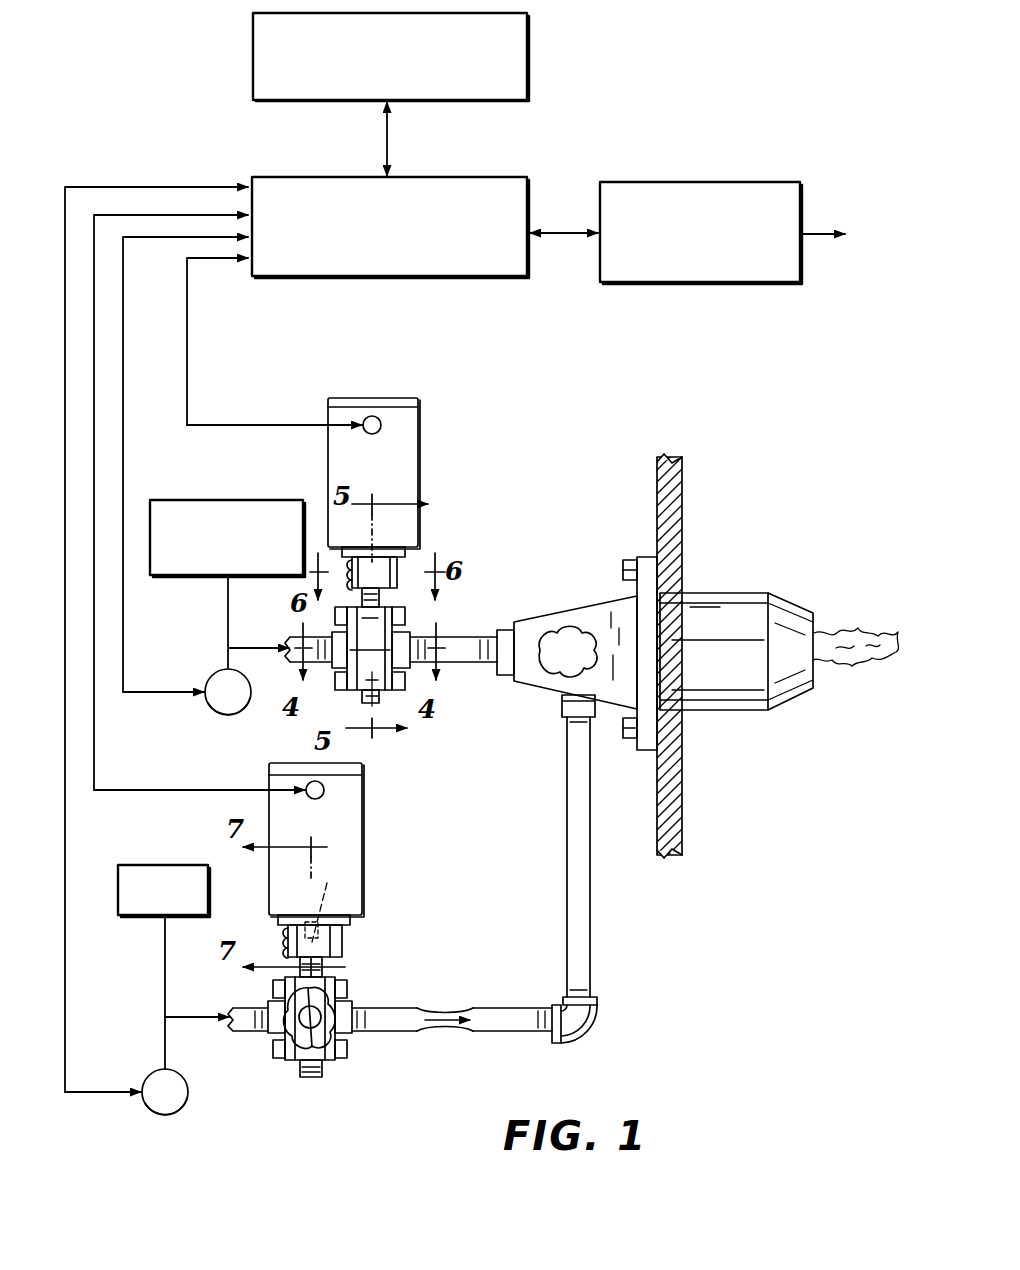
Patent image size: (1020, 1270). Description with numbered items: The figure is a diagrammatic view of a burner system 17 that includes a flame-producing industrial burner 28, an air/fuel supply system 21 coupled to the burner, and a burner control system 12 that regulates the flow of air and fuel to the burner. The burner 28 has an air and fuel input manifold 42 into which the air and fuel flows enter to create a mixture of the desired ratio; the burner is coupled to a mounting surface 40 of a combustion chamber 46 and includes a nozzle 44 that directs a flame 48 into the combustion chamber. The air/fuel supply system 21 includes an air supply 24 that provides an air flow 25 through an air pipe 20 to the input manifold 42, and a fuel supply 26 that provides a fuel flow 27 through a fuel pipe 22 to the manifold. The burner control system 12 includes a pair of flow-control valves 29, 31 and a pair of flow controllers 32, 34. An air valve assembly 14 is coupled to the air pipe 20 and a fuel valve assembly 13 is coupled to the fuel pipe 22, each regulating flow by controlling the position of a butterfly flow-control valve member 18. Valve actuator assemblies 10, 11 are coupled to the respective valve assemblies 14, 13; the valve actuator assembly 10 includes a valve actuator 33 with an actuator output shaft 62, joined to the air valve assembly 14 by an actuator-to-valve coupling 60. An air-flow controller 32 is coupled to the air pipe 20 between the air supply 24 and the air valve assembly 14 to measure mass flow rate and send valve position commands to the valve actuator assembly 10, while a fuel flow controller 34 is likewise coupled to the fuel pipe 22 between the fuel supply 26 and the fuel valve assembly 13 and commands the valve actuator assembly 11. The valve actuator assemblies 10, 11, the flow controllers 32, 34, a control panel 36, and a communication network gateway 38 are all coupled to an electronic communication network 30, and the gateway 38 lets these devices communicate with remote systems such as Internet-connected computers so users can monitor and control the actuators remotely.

The valve actuator assembly 10 is at (396, 821).
The valve actuator assembly 11 is at (425, 432).
The burner control system 12 is at (183, 138).
The fuel valve assembly 13 is at (426, 630).
The air valve assembly 14 is at (365, 994).
The burner system 17 is at (686, 988).
The butterfly flow-control valve member 18 is at (303, 1040).
The air pipe 20 is at (251, 1034).
The air/fuel supply system 21 is at (190, 636).
The fuel pipe 22 is at (300, 655).
The air supply 24 is at (181, 866).
The air flow 25 is at (590, 661).
The fuel supply 26 is at (232, 500).
The fuel flow 27 is at (227, 627).
The industrial burner 28 is at (786, 521).
The flow-control valve 29 is at (510, 463).
The electronic communication network 30 is at (482, 178).
The flow-control valve 31 is at (436, 873).
The air-flow controller 32 is at (168, 1119).
The valve actuator 33 is at (373, 854).
The fuel flow controller 34 is at (217, 713).
The control panel 36 is at (528, 57).
The communication network gateway 38 is at (658, 183).
The mounting surface 40 is at (682, 496).
The air and fuel input manifold 42 is at (597, 603).
The nozzle 44 is at (724, 716).
The combustion chamber 46 is at (862, 730).
The flame 48 is at (863, 609).
The actuator-to-valve coupling 60 is at (428, 557).
The actuator output shaft 62 is at (329, 898).